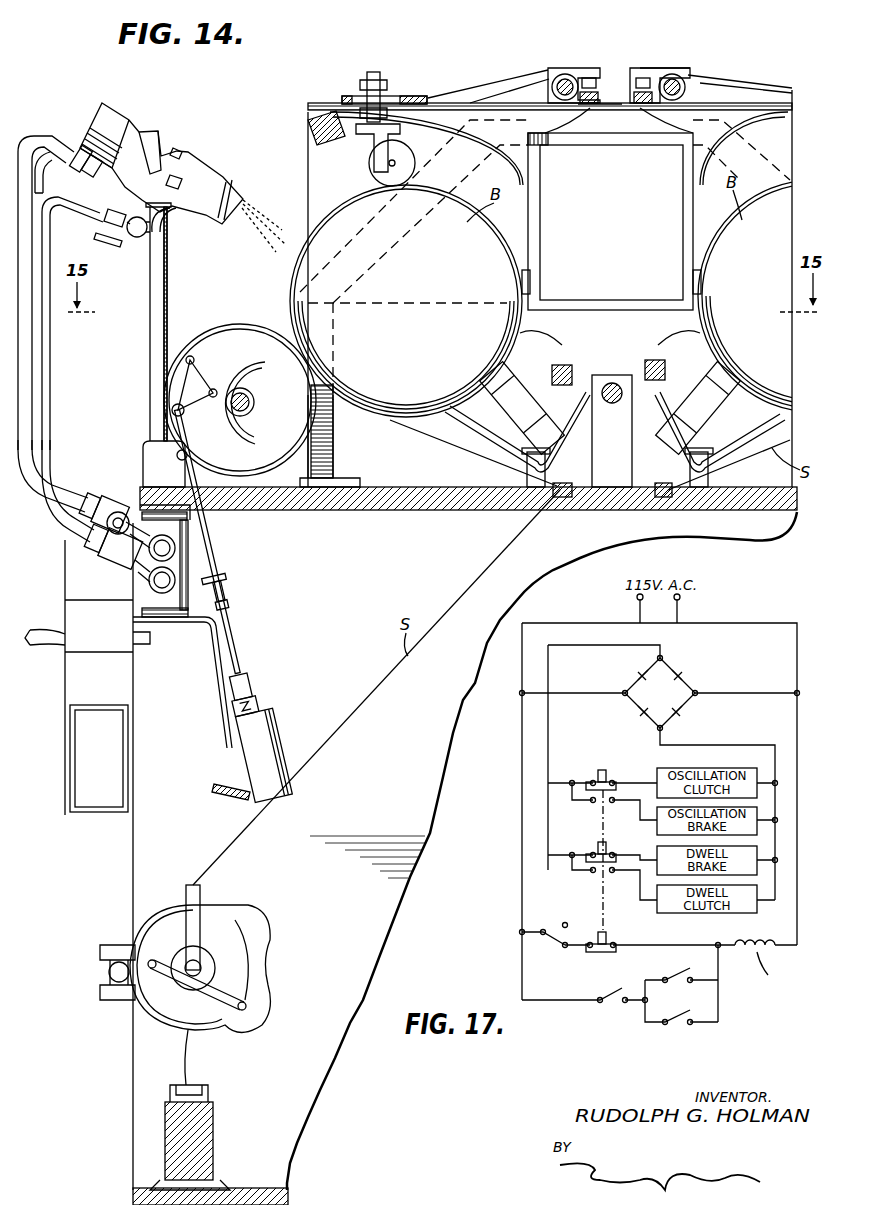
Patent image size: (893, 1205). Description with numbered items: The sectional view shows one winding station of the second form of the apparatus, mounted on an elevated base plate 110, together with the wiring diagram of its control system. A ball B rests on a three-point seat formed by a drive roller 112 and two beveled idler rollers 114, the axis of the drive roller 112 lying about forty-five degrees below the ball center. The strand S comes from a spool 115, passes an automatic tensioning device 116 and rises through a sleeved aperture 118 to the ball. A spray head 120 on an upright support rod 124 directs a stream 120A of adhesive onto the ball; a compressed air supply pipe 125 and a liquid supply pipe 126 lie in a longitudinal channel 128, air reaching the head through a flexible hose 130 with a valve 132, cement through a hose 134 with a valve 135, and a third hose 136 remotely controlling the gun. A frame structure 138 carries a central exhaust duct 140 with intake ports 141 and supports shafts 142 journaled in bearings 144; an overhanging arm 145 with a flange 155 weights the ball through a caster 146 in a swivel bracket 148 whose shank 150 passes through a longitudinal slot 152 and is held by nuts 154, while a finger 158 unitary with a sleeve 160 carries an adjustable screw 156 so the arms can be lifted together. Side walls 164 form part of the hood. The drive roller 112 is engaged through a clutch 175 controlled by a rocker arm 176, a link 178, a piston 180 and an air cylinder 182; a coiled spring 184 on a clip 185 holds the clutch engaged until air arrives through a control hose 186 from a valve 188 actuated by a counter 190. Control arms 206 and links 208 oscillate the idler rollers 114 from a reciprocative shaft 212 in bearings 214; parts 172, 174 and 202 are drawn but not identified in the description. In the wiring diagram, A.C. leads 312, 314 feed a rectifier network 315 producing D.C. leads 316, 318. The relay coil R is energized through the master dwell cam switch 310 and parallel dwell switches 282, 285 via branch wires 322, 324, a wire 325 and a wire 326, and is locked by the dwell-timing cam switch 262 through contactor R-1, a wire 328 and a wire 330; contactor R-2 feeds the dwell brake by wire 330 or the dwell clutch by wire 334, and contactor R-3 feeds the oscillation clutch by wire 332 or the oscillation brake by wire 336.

In FIG. 14, the base plate 110 is at (463, 500).
In FIG. 14, the drive roller 112 is at (243, 325).
In FIG. 14, the beveled idler roller 114 is at (458, 432).
In FIG. 14, the spool 115 is at (214, 1130).
In FIG. 14, the automatic tensioning device 116 is at (262, 1008).
In FIG. 14, the sleeved aperture 118 is at (562, 498).
In FIG. 14, the spray head 120 is at (203, 163).
In FIG. 14, the stream of adhesive material 120A is at (266, 226).
In FIG. 14, the upright support rod 124 is at (152, 334).
In FIG. 14, the compressed air supply pipe 125 is at (220, 581).
In FIG. 14, the liquid supply pipe 126 is at (168, 602).
In FIG. 14, the longitudinal channel 128 is at (192, 537).
In FIG. 14, the flexible hose 130 is at (61, 376).
In FIG. 14, the valve 132 is at (116, 510).
In FIG. 14, the hose 134 is at (60, 366).
In FIG. 14, the valve 135 is at (138, 238).
In FIG. 14, the third hose 136 is at (36, 181).
In FIG. 14, the frame structure 138 is at (335, 260).
In FIG. 14, the central exhaust duct 140 is at (610, 310).
In FIG. 14, the intake port 141 is at (538, 302).
In FIG. 14, the shaft 142 is at (566, 74).
In FIG. 14, the bearing 144 is at (650, 68).
In FIG. 14, the overhanging arm 145 is at (488, 88).
In FIG. 14, the pressure roller or caster 146 is at (407, 157).
In FIG. 14, the swivel bracket 148 is at (374, 138).
In FIG. 14, the shank 150 is at (373, 80).
In FIG. 14, the longitudinal slot 152 is at (352, 97).
In FIG. 14, the nuts 154 is at (387, 96).
In FIG. 14, the rearwardly extending flange 155 is at (620, 105).
In FIG. 14, the adjustable screw 156 is at (592, 75).
In FIG. 14, the finger 158 is at (622, 78).
In FIG. 14, the sleeve 160 is at (551, 72).
In FIG. 14, the side wall 164 is at (408, 472).
In FIG. 14, the hub 172 is at (239, 390).
In FIG. 14, the pedestal 174 is at (297, 513).
In FIG. 14, the clutch 175 is at (240, 425).
In FIG. 14, the rocker arm 176 is at (190, 408).
In FIG. 14, the link 178 is at (222, 563).
In FIG. 14, the piston 180 is at (258, 690).
In FIG. 14, the air cylinder 182 is at (272, 740).
In FIG. 14, the coiled spring 184 is at (258, 682).
In FIG. 14, the clip 185 is at (228, 582).
In FIG. 14, the control hose 186 is at (145, 640).
In FIG. 14, the valve 188 is at (95, 655).
In FIG. 14, the counter 190 is at (88, 581).
In FIG. 14, the support 202 is at (492, 473).
In FIG. 14, the control arm 206 is at (527, 387).
In FIG. 14, the link 208 is at (565, 365).
In FIG. 14, the longitudinally reciprocative shaft 212 is at (610, 383).
In FIG. 14, the bearing 214 is at (618, 453).
In FIG. 17, the dwell-timing cam switch 262 is at (548, 930).
In FIG. 17, the left dwell switch 282 is at (681, 983).
In FIG. 17, the right dwell switch 285 is at (681, 1002).
In FIG. 17, the master dwell cam switch 310 is at (605, 1008).
In FIG. 17, the A.C. lead 312 is at (522, 785).
In FIG. 17, the A.C. lead 314 is at (797, 740).
In FIG. 17, the rectifier network 315 is at (696, 680).
In FIG. 17, the D.C. lead 316 is at (548, 728).
In FIG. 17, the D.C. lead 318 is at (760, 745).
In FIG. 17, the branch wire 322 is at (648, 978).
In FIG. 17, the branch wire 324 is at (672, 1025).
In FIG. 17, the wire 325 is at (755, 1024).
In FIG. 17, the wire 326 is at (730, 950).
In FIG. 17, the wire 328 is at (578, 950).
In FIG. 17, the wire 330 is at (657, 857).
In FIG. 17, the wire 332 is at (628, 783).
In FIG. 17, the wire 334 is at (640, 885).
In FIG. 17, the wire 336 is at (657, 820).
In FIG. 17, the relay contactor R-1 is at (618, 948).
In FIG. 17, the relay contactor R-2 is at (600, 843).
In FIG. 17, the relay contactor R-3 is at (600, 771).
In FIG. 17, the relay coil R is at (757, 963).